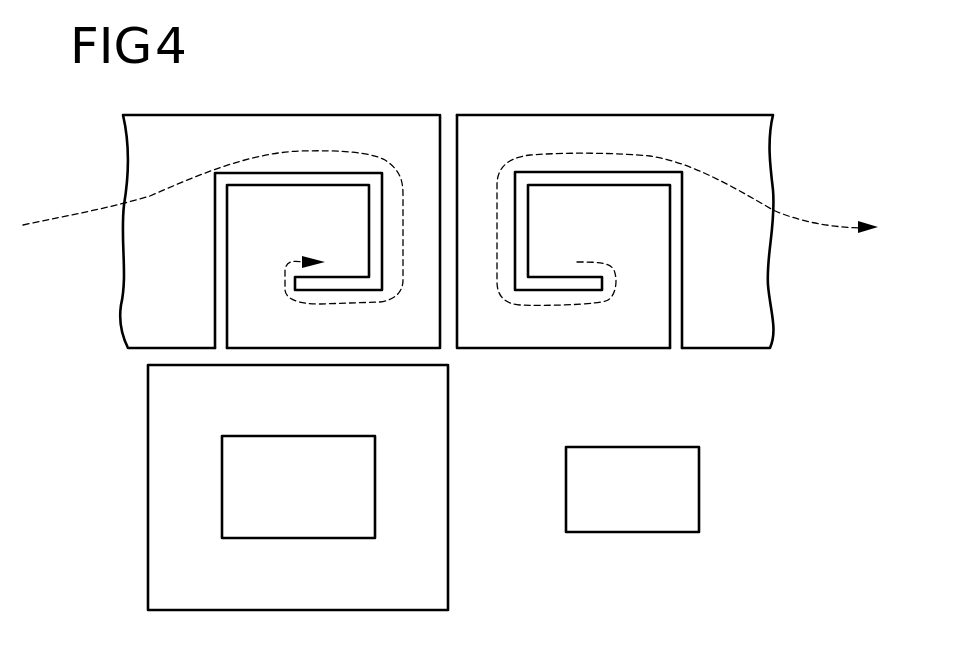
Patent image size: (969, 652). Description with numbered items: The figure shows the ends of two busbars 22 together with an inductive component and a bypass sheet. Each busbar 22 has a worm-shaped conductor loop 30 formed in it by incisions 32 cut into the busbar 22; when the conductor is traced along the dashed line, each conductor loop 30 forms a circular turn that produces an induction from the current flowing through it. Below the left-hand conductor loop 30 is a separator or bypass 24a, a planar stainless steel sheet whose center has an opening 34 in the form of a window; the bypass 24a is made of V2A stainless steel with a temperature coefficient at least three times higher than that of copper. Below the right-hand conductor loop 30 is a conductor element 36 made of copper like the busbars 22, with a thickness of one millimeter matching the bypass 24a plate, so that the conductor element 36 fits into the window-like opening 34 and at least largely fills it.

The busbar 22 is at (360, 128).
The conductor loop 30 is at (265, 243).
The incision 32 is at (225, 327).
The opening 34 is at (360, 493).
The bypass 24a is at (432, 577).
The conductor element 36 is at (690, 497).